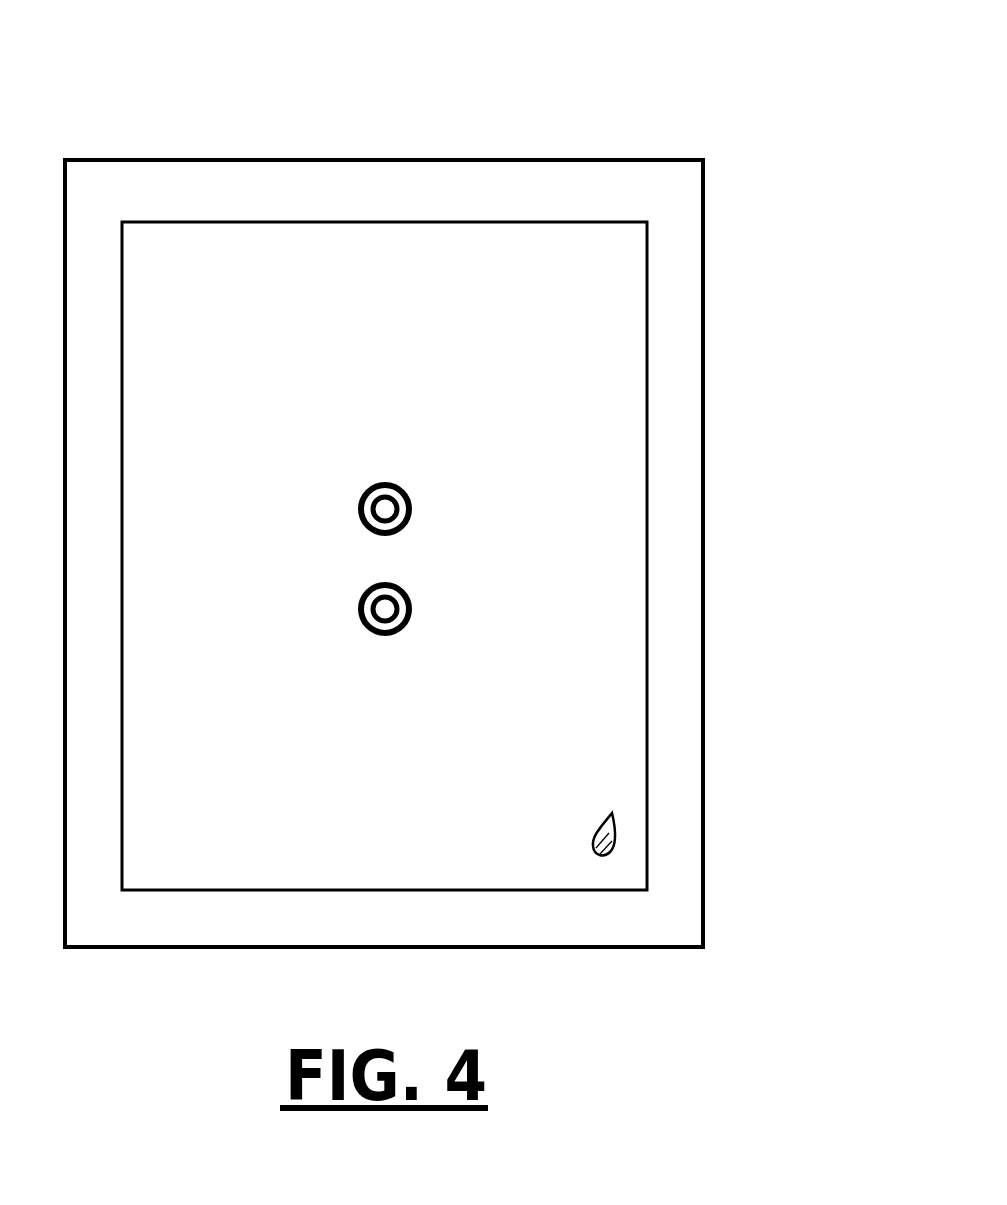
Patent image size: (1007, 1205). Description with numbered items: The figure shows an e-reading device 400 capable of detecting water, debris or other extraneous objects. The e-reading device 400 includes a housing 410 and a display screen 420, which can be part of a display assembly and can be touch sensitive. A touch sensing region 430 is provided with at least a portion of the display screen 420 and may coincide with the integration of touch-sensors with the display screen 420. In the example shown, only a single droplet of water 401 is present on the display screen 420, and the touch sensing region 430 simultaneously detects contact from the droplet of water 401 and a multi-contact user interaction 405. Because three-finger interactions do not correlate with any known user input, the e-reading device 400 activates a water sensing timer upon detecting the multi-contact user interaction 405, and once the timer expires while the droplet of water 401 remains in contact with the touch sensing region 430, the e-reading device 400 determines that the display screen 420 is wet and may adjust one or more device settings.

The e-reading device 400 is at (619, 84).
The housing 410 is at (384, 159).
The display screen 420 is at (649, 479).
The touch sensing region 430 is at (205, 262).
The multi-contact user interaction 405 is at (423, 517).
The droplet of water 401 is at (598, 828).